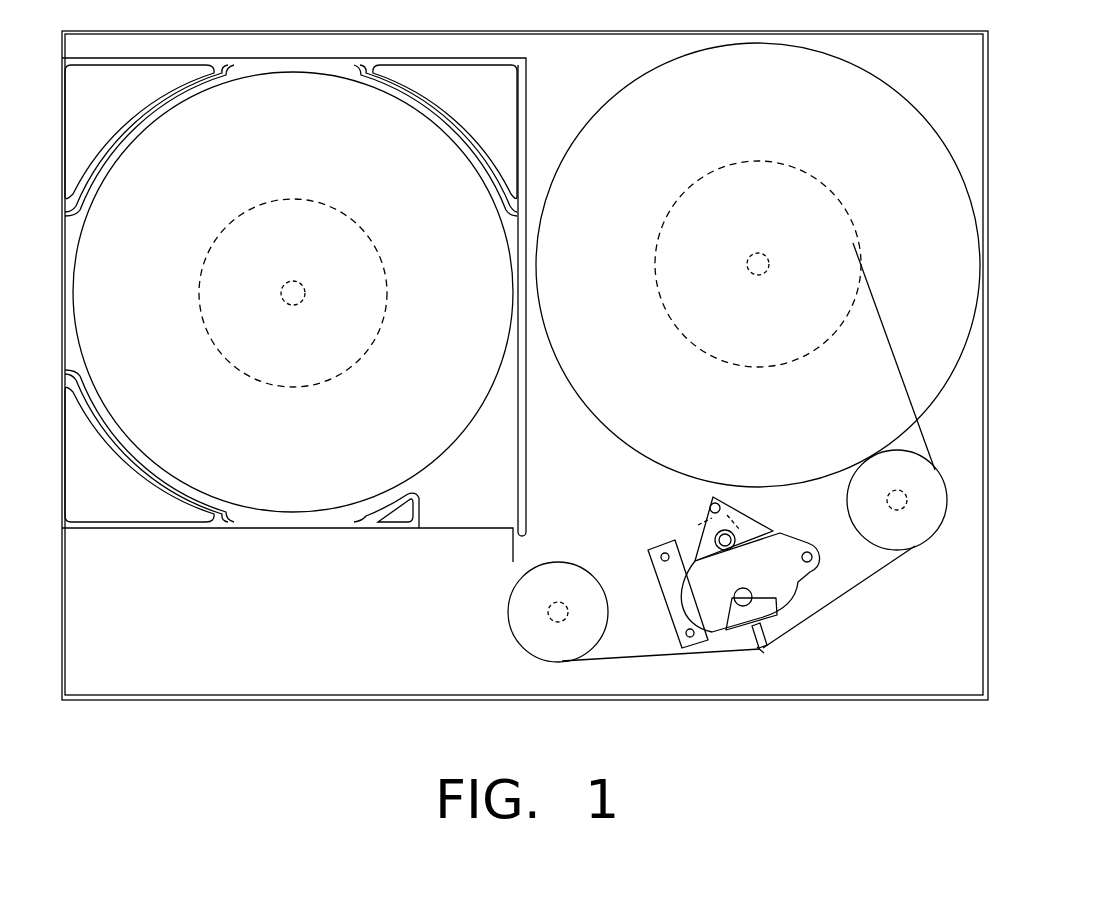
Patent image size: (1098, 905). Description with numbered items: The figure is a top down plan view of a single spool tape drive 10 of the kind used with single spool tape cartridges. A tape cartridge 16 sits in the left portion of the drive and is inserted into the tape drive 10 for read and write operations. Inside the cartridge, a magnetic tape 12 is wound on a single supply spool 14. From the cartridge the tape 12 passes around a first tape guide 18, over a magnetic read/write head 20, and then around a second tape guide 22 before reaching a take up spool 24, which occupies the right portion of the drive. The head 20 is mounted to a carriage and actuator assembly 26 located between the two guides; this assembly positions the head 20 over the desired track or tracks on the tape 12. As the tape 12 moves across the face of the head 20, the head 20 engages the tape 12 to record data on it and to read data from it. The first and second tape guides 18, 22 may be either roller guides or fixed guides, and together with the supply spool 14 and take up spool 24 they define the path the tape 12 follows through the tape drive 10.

The tape drive 10 is at (1007, 463).
The magnetic tape 12 is at (858, 586).
The supply spool 14 is at (449, 456).
The tape cartridge 16 is at (527, 69).
The first tape guide 18 is at (514, 621).
The magnetic read/write head 20 is at (768, 647).
The second tape guide 22 is at (924, 539).
The take up spool 24 is at (600, 425).
The carriage and actuator assembly 26 is at (680, 523).